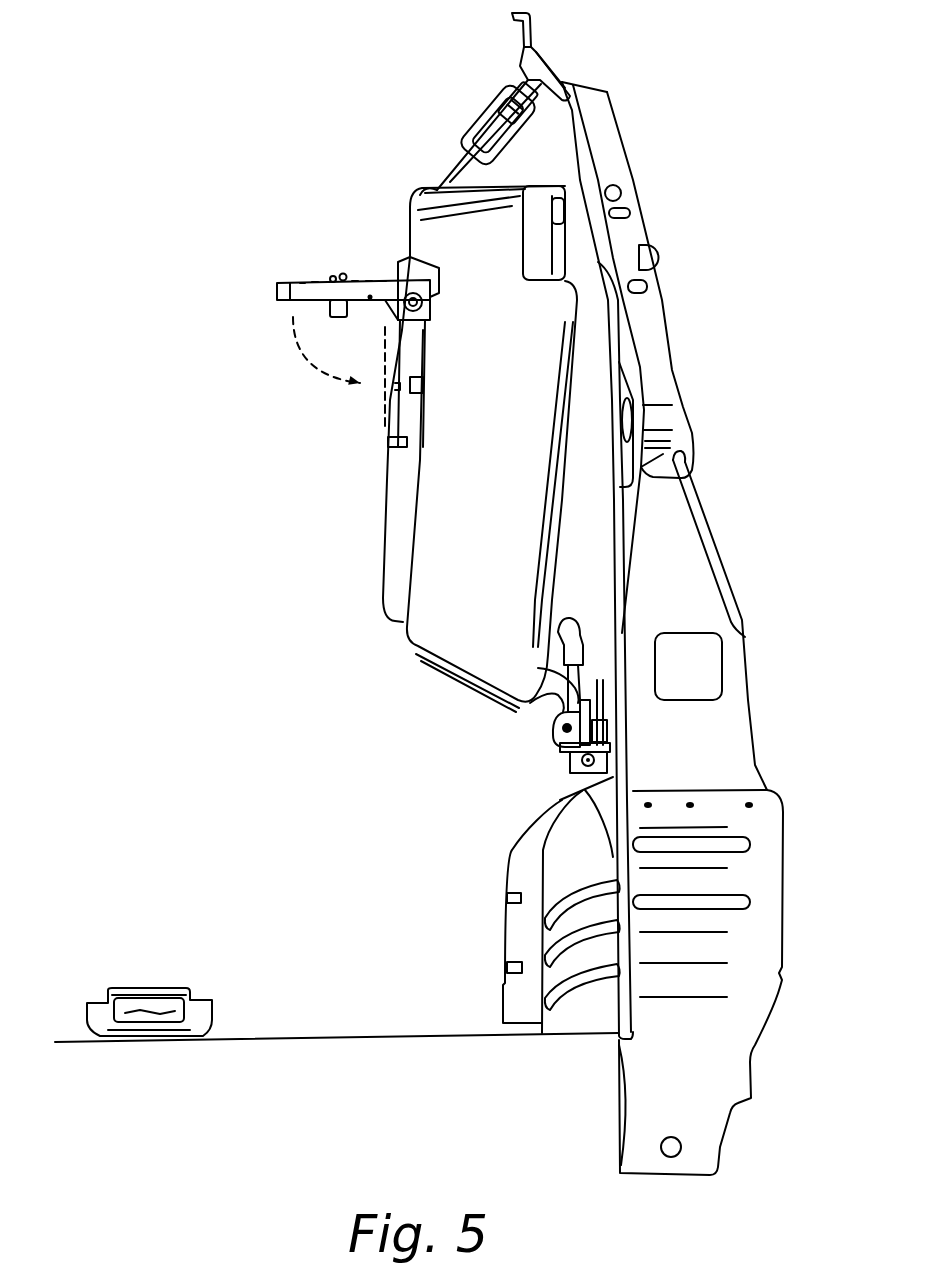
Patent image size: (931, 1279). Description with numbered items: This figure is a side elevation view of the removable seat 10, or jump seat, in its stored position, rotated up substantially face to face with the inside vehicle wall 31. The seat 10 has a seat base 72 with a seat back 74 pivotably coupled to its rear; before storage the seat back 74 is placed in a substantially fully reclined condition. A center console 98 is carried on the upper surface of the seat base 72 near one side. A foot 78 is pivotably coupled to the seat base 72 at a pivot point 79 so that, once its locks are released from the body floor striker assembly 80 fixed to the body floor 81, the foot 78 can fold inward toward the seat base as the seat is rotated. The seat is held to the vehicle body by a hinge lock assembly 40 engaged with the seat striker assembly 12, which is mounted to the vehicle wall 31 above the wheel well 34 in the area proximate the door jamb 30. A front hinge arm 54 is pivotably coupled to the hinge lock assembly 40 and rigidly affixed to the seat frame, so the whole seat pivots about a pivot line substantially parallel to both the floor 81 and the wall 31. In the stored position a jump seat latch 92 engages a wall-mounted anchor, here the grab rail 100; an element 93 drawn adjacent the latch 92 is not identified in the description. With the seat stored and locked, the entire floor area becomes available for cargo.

The removable seat 10 is at (152, 238).
The seat striker assembly 12 is at (558, 762).
The door jamb 30 is at (612, 862).
The vehicle wall 31 is at (573, 580).
The wheel well 34 is at (567, 883).
The hinge lock assembly 40 is at (550, 742).
The front hinge arm 54 is at (553, 716).
The seat base 72 is at (433, 662).
The seat back 74 is at (387, 520).
The foot 78 is at (262, 287).
The pivot point 79 is at (405, 290).
The body floor striker assembly 80 is at (210, 1013).
The body floor 81 is at (330, 1037).
The jump seat latch 92 is at (477, 110).
The belt webbing 93 is at (453, 170).
The center console 98 is at (540, 207).
The grab rail 100 is at (525, 73).